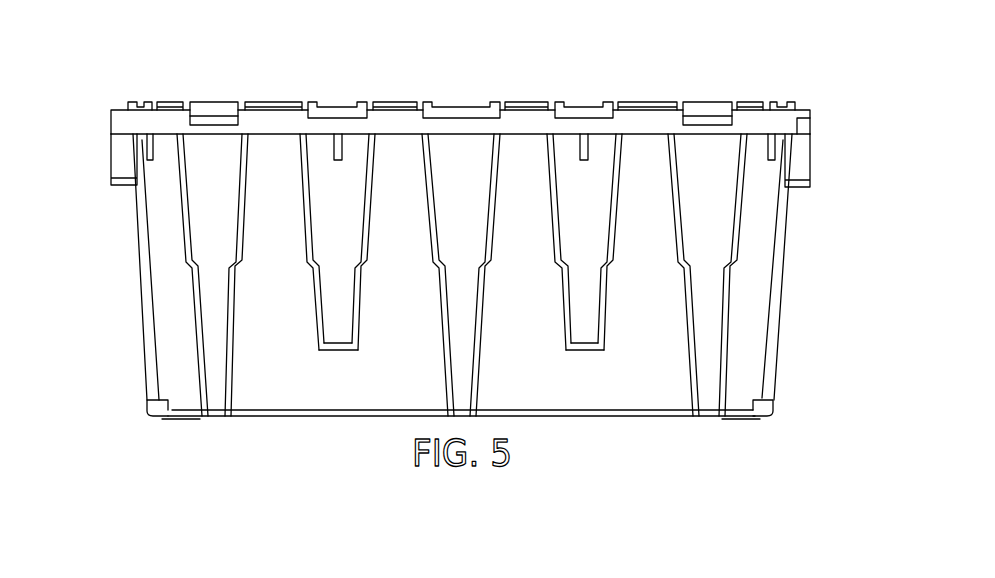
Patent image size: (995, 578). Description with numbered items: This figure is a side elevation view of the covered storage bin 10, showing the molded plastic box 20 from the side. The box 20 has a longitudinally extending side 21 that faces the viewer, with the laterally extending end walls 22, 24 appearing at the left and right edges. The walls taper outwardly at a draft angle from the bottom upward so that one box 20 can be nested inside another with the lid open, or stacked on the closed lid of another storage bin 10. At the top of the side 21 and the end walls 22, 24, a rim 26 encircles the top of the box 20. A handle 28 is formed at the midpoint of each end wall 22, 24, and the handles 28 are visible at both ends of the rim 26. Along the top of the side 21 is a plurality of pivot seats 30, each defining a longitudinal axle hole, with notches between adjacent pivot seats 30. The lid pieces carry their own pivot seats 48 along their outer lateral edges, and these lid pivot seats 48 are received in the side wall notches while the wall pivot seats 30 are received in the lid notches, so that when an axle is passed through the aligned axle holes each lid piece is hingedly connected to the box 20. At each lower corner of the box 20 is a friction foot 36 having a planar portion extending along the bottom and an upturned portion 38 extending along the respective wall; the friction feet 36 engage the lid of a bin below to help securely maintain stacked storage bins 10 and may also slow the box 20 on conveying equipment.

The storage bin 10 is at (116, 82).
The box 20 is at (117, 300).
The side 21 is at (295, 388).
The end wall 22 is at (133, 235).
The end wall 24 is at (783, 282).
The rim 26 is at (810, 128).
The handle 28 is at (111, 157).
The pivot seat 30 is at (647, 107).
The friction foot 36 is at (150, 420).
The upturned portion 38 is at (148, 408).
The pivot seat 48 is at (703, 101).